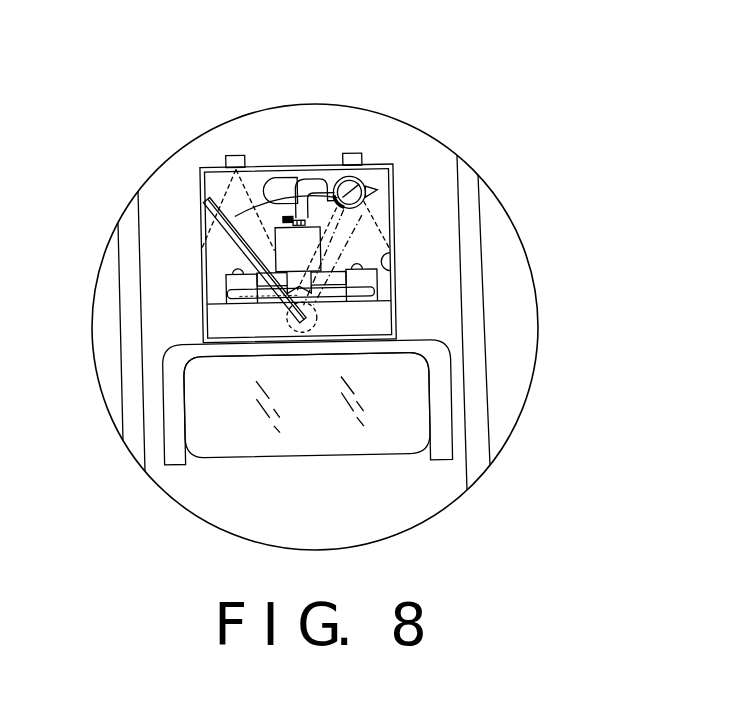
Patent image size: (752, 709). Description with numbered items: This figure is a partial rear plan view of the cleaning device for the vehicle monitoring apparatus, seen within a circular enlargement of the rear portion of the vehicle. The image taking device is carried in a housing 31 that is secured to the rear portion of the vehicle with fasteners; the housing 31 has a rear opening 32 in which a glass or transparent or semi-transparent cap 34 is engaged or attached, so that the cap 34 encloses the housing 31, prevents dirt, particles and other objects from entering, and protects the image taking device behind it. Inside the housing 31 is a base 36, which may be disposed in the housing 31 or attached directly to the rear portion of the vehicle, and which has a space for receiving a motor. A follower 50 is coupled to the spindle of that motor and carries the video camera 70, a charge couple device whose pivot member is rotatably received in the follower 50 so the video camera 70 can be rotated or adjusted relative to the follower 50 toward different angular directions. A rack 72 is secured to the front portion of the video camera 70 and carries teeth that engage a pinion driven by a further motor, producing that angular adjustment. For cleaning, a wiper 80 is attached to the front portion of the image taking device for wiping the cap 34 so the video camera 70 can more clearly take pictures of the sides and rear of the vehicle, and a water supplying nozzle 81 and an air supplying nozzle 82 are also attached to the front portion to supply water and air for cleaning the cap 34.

The housing 31 is at (480, 218).
The rear opening 32 is at (388, 268).
The cap 34 is at (223, 253).
The base 36 is at (237, 303).
The follower 50 is at (303, 250).
The video camera 70 is at (291, 178).
The rack 72 is at (320, 192).
The wiper 80 is at (223, 236).
The water supplying nozzle 81 is at (232, 156).
The air supplying nozzle 82 is at (355, 155).